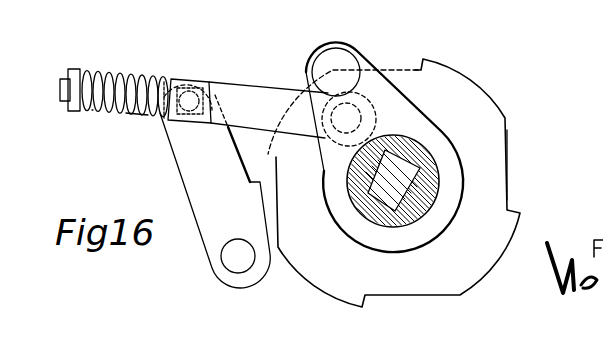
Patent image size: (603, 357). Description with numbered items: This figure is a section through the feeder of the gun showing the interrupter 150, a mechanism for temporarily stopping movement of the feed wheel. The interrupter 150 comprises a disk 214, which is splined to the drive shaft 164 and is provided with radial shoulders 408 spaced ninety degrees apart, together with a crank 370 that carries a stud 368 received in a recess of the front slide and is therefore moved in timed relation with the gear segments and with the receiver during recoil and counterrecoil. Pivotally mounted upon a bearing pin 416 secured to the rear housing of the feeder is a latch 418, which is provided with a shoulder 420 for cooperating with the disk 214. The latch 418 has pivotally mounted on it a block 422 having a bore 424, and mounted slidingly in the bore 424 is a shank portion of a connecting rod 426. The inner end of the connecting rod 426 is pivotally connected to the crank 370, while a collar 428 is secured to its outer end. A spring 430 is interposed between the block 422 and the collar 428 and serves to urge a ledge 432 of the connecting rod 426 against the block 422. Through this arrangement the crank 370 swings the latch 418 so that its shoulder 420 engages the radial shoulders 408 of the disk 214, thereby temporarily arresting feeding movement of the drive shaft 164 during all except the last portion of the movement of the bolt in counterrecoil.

The interrupter 150 is at (556, 70).
The drive shaft 164 is at (404, 165).
The disk 214 is at (508, 151).
The stud 368 is at (343, 56).
The crank 370 is at (413, 104).
The radial shoulders 408 is at (273, 158).
The bearing pin 416 is at (235, 266).
The latch 418 is at (229, 158).
The shoulder 420 is at (249, 176).
The block 422 is at (183, 80).
The bore 424 is at (229, 90).
The connecting rod 426 is at (137, 114).
The collar 428 is at (78, 69).
The spring 430 is at (108, 71).
The ledge 432 is at (205, 86).